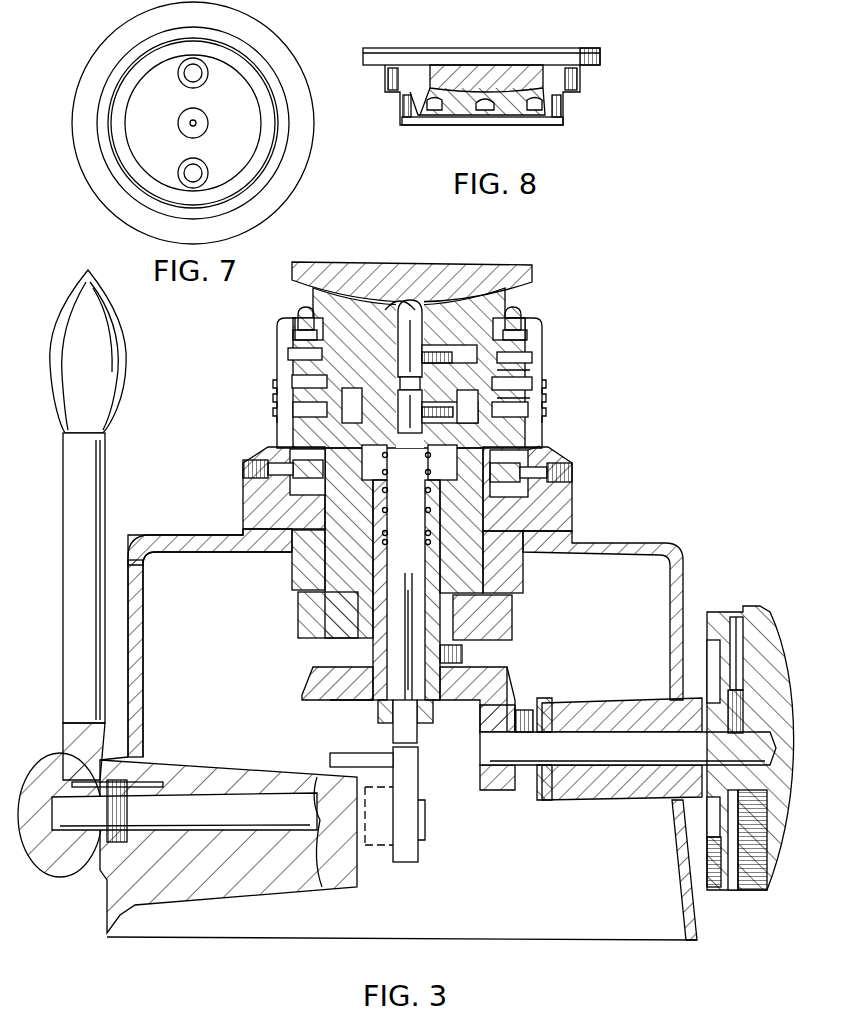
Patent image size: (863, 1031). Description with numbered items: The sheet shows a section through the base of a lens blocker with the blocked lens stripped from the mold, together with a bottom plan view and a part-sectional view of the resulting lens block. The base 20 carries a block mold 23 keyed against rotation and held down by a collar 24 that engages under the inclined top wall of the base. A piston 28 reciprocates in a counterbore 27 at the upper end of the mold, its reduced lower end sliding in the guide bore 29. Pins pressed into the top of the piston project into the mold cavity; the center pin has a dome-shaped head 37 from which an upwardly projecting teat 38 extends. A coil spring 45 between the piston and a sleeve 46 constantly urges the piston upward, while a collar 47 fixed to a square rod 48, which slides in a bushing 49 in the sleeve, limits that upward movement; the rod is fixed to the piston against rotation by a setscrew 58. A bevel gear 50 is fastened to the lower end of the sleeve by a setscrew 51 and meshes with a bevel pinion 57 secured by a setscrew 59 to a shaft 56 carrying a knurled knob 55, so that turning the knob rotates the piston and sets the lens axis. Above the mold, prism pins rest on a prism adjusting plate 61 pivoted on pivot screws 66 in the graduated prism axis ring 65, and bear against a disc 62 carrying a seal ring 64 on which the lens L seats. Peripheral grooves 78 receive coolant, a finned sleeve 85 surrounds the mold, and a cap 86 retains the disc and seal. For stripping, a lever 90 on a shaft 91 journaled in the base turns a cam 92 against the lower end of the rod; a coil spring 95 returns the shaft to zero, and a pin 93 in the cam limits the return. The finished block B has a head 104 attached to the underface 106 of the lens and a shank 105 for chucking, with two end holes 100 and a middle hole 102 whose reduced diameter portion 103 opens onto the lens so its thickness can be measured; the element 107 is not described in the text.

In FIG. 3, the base 20 is at (626, 548).
In FIG. 3, the block mold 23 is at (333, 550).
In FIG. 3, the collar 24 is at (510, 613).
In FIG. 3, the counterbore 27 is at (348, 407).
In FIG. 3, the piston 28 is at (350, 363).
In FIG. 3, the guide bore 29 is at (441, 572).
In FIG. 3, the dome-shaped head 37 is at (414, 302).
In FIG. 3, the teat 38 is at (404, 305).
In FIG. 3, the coil spring 45 is at (374, 572).
In FIG. 3, the sleeve 46 is at (432, 702).
In FIG. 3, the collar 47 is at (425, 722).
In FIG. 3, the rod 48 is at (383, 702).
In FIG. 3, the bushing 49 is at (385, 683).
In FIG. 3, the bevel gear 50 is at (305, 677).
In FIG. 3, the setscrew 51 is at (462, 657).
In FIG. 3, the knurled knob 55 is at (757, 612).
In FIG. 3, the shaft 56 is at (598, 766).
In FIG. 3, the bevel pinion 57 is at (530, 790).
In FIG. 3, the setscrew 58 is at (453, 412).
In FIG. 3, the setscrew 59 is at (522, 710).
In FIG. 3, the prism adjusting plate 61 is at (540, 452).
In FIG. 3, the disc or washer 62 is at (294, 335).
In FIG. 3, the seal ring 64 is at (300, 310).
In FIG. 3, the graduated prism axis ring 65 is at (572, 496).
In FIG. 3, the pivot screws 66 is at (246, 470).
In FIG. 3, the peripheral grooves 78 is at (530, 408).
In FIG. 3, the finned sleeve 85 is at (276, 397).
In FIG. 3, the cap 86 is at (543, 350).
In FIG. 3, the lever 90 is at (65, 568).
In FIG. 3, the shaft 91 is at (232, 772).
In FIG. 3, the cam 92 is at (410, 862).
In FIG. 3, the pin 93 is at (336, 753).
In FIG. 3, the coil spring 95 is at (128, 810).
In FIG. 7, the end holes 100 is at (200, 80).
In FIG. 8, the end holes 100 is at (436, 110).
In FIG. 7, the middle hole 102 is at (205, 124).
In FIG. 8, the middle hole 102 is at (485, 110).
In FIG. 8, the reduced diameter portion 103 is at (470, 72).
In FIG. 7, the head 104 is at (108, 170).
In FIG. 8, the head 104 is at (386, 92).
In FIG. 7, the shank 105 is at (130, 172).
In FIG. 8, the shank 105 is at (402, 110).
In FIG. 7, the underface 106 is at (80, 150).
In FIG. 8, the underface 106 is at (378, 70).
In FIG. 8, the lens 107 is at (510, 68).
In FIG. 7, the lens L is at (306, 132).
In FIG. 8, the lens L is at (600, 63).
In FIG. 3, the lens L is at (483, 270).
In FIG. 7, the block B is at (278, 157).
In FIG. 8, the block B is at (565, 110).
In FIG. 3, the block B is at (506, 300).